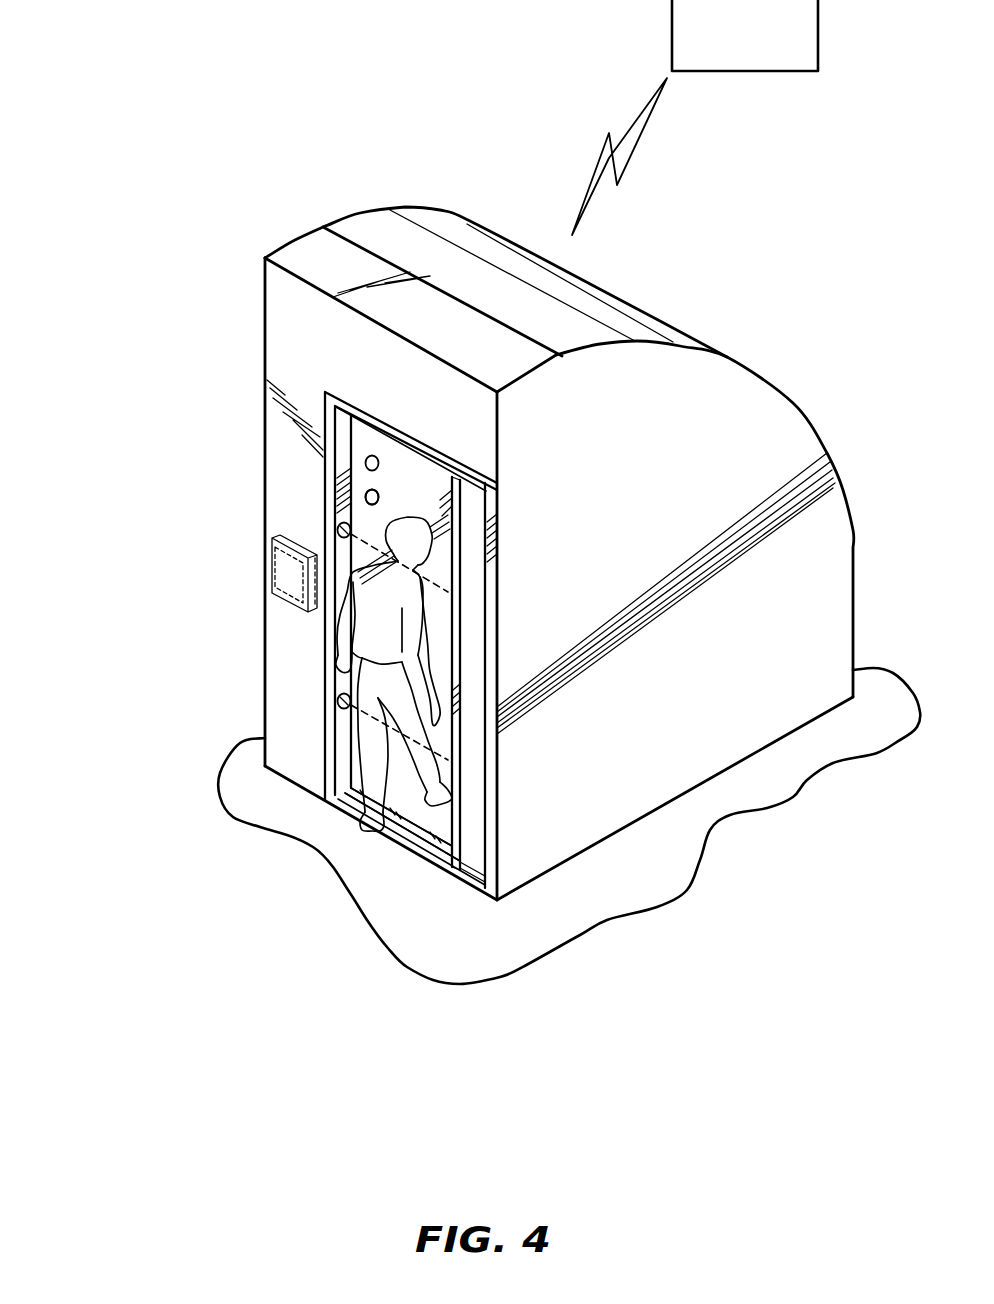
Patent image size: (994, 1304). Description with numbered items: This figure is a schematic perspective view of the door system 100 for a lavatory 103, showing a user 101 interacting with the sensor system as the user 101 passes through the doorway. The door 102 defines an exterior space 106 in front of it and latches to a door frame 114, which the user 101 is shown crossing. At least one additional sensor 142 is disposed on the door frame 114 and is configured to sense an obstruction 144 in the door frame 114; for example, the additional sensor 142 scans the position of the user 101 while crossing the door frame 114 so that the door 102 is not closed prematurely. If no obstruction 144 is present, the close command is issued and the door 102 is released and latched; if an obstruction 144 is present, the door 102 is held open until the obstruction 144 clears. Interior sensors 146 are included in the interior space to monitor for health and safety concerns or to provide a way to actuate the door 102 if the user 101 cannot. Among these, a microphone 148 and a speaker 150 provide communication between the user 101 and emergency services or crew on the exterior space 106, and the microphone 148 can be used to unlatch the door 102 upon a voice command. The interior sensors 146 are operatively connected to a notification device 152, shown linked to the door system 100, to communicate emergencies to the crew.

The door system 100 is at (226, 203).
The user 101 is at (360, 740).
The door 102 is at (473, 555).
The lavatory 103 is at (607, 817).
The exterior space 106 is at (55, 521).
The door frame 114 is at (407, 437).
The additional sensor 142 is at (337, 530).
The obstruction 144 is at (402, 824).
The interior sensors 146 is at (370, 455).
The microphone 148 is at (365, 497).
The speaker 150 is at (372, 497).
The notification device 152 is at (724, 33).